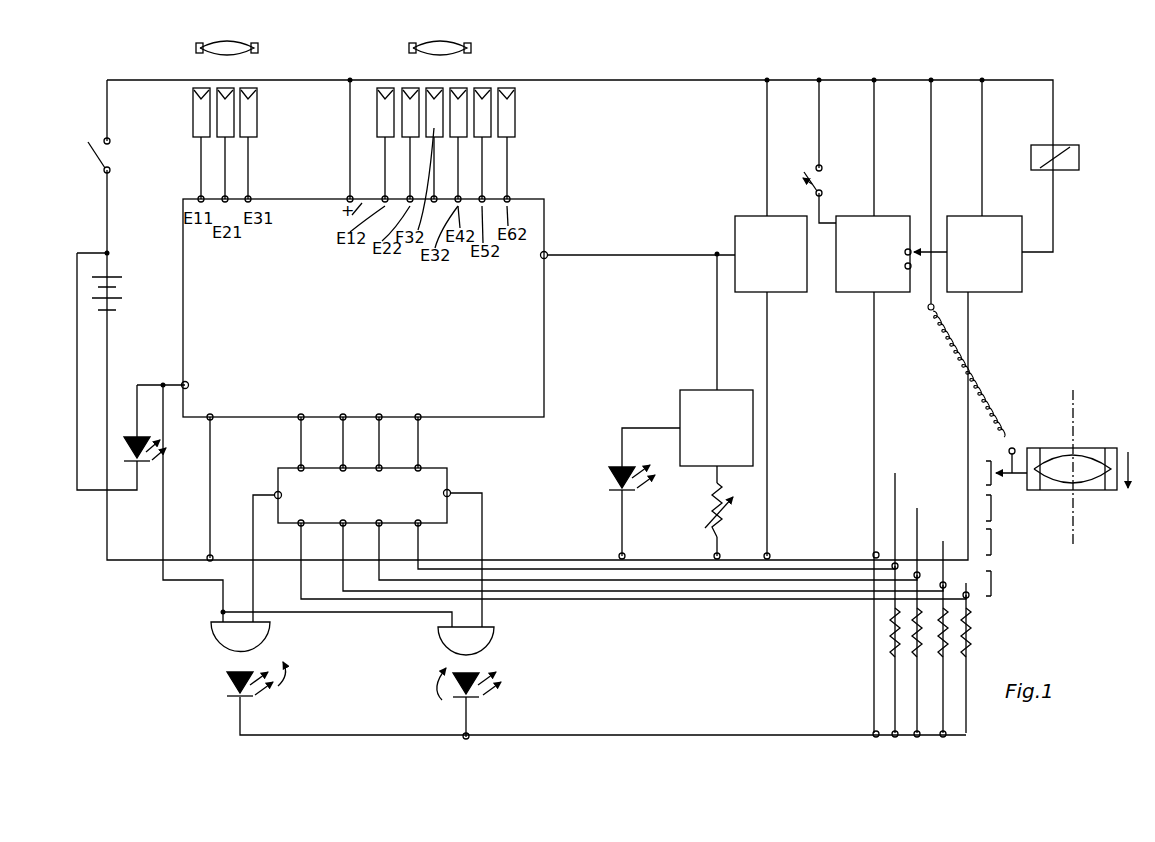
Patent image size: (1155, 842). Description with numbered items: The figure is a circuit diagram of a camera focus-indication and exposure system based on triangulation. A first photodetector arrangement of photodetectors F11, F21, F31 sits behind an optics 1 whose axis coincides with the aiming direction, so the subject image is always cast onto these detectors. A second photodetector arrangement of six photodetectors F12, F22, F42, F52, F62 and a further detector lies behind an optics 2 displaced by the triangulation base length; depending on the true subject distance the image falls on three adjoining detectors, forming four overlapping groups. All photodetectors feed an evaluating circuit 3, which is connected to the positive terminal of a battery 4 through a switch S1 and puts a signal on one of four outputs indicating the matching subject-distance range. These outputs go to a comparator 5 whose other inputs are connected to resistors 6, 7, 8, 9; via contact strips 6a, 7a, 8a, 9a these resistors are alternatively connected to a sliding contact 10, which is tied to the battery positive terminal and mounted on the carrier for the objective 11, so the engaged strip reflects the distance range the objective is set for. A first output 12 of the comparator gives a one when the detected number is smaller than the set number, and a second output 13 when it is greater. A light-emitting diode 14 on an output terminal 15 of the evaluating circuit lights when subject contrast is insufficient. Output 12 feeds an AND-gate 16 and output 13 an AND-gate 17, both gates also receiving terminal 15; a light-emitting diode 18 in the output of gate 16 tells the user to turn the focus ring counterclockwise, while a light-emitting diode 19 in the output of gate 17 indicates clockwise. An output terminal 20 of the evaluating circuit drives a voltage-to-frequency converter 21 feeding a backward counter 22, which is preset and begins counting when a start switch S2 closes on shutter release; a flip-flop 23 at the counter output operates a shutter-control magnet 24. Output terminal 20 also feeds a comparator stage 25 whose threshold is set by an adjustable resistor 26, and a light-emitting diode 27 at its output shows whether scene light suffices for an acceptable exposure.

The optics 1 is at (226, 53).
The optics 2 is at (440, 53).
The evaluating circuit 3 is at (196, 254).
The battery 4 is at (124, 302).
The comparator 5 is at (443, 470).
The resistor 6 is at (970, 620).
The resistor 7 is at (948, 638).
The resistor 8 is at (912, 630).
The resistor 9 is at (886, 614).
The contact strip 6a is at (993, 585).
The contact strip 7a is at (993, 545).
The contact strip 8a is at (993, 510).
The contact strip 9a is at (988, 458).
The sliding contact 10 is at (1013, 445).
The objective 11 is at (1045, 455).
The first output 12 is at (274, 492).
The second output 13 is at (452, 490).
The light-emitting diode 14 is at (134, 435).
The output terminal 15 is at (189, 381).
The AND-gate 16 is at (268, 630).
The AND-gate 17 is at (492, 634).
The light-emitting diode 18 is at (230, 688).
The light-emitting diode 19 is at (476, 688).
The output terminal 20 is at (541, 259).
The voltage-to-frequency converter 21 is at (785, 294).
The counter 22 is at (887, 283).
The flip-flop 23 is at (1005, 286).
The shutter-control magnet 24 is at (1072, 165).
The comparator stage 25 is at (703, 405).
The adjustable resistor 26 is at (728, 516).
The light-emitting diode 27 is at (610, 475).
The switch S1 is at (112, 150).
The start switch S2 is at (810, 158).
The photodetector F11 is at (194, 110).
The photodetector F21 is at (226, 100).
The photodetector F31 is at (252, 118).
The photodetector F12 is at (382, 123).
The photodetector F22 is at (410, 98).
The photodetector F42 is at (456, 100).
The photodetector F52 is at (482, 100).
The photodetector F62 is at (512, 117).